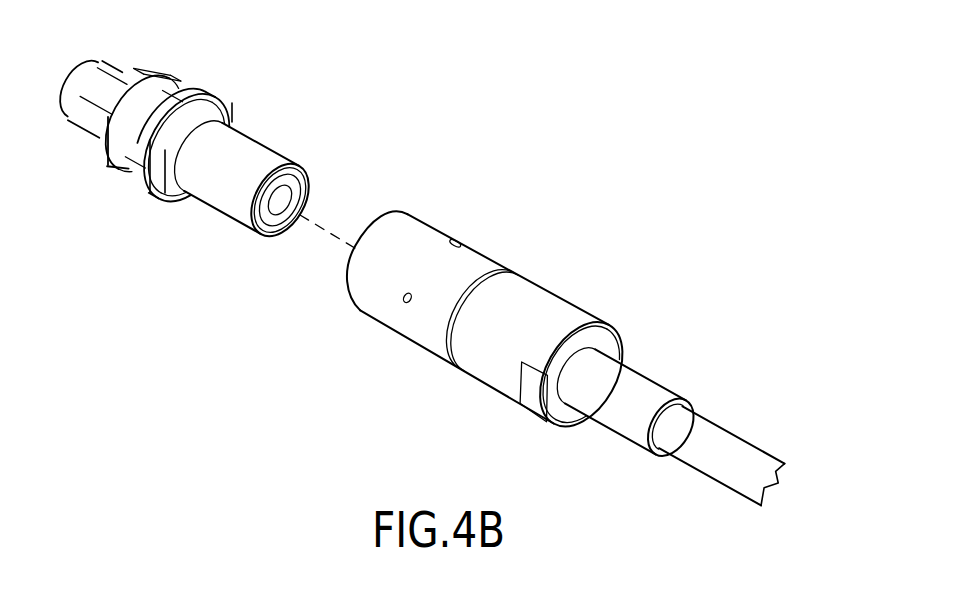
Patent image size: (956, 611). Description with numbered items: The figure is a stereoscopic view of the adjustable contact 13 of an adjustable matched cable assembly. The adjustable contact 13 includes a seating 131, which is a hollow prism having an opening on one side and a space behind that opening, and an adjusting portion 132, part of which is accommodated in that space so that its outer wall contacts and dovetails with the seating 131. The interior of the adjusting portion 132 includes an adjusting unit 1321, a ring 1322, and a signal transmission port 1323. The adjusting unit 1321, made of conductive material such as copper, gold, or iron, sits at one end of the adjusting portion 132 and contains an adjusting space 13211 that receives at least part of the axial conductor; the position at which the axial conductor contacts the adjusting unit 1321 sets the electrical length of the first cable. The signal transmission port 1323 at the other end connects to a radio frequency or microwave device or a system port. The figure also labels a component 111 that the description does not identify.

The adjustable contact 13 is at (587, 180).
The seating 131 is at (501, 254).
The adjusting portion 132 is at (245, 113).
The adjusting unit 1321 is at (270, 227).
The adjusting space 13211 is at (277, 201).
The ring 1322 is at (160, 180).
The signal transmission port 1323 is at (207, 87).
The cable 111 is at (717, 452).